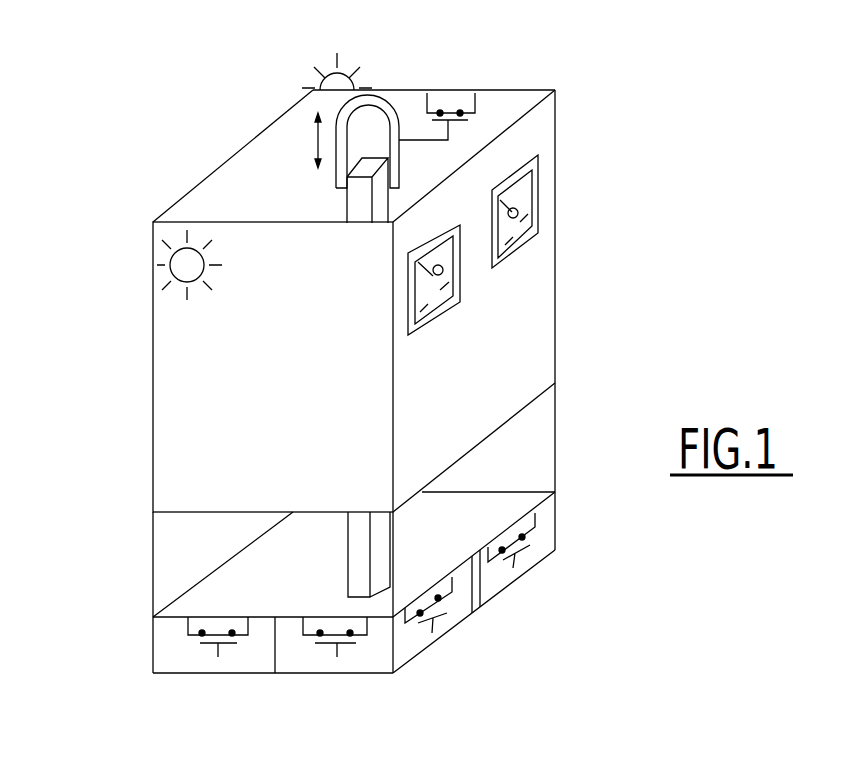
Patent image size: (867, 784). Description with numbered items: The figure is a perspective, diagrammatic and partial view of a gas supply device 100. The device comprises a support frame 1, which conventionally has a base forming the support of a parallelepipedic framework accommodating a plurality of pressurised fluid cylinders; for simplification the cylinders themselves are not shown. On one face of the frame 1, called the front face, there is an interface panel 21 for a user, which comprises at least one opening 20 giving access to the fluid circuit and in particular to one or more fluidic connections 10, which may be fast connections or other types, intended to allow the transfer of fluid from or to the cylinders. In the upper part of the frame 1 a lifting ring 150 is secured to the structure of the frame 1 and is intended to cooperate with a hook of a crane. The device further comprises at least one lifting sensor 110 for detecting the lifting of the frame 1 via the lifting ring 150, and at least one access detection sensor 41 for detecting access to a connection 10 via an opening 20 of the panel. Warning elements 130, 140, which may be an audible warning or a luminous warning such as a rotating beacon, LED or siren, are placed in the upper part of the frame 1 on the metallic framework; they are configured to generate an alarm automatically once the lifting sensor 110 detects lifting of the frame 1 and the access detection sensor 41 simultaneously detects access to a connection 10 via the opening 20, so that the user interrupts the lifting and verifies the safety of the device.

The support frame 1 is at (174, 402).
The fluidic connection 10 is at (458, 276).
The opening 20 is at (444, 246).
The interface panel 21 is at (455, 405).
The access detection sensor 41 is at (528, 250).
The gas supply device 100 is at (607, 265).
The lifting sensor 110 is at (480, 115).
The warning element 130 is at (300, 80).
The warning element 140 is at (180, 267).
The lifting ring 150 is at (395, 107).